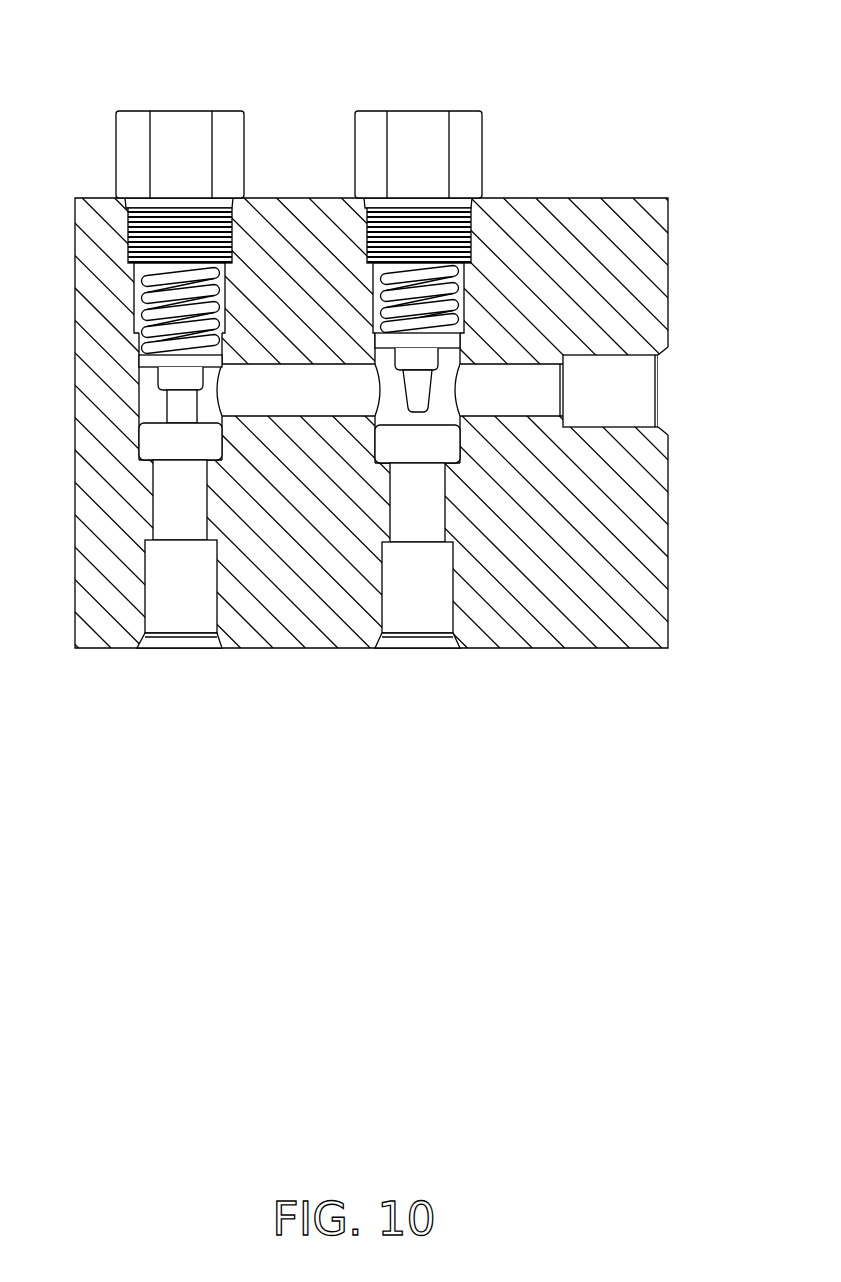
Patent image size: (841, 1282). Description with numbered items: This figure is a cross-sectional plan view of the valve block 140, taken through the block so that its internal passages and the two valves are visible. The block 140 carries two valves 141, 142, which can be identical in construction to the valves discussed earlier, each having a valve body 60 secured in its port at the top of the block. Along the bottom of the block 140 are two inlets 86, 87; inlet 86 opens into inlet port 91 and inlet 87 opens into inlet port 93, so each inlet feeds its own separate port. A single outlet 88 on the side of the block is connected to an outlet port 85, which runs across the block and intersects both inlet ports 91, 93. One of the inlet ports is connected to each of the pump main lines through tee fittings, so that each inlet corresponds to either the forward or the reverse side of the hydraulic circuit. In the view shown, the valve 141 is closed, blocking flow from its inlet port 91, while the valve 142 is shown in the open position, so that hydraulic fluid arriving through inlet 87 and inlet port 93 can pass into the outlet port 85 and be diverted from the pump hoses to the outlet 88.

The block 140 is at (585, 128).
The valve 141 is at (135, 92).
The valve 142 is at (373, 92).
The valve body 60 is at (200, 168).
The outlet port 85 is at (487, 403).
The outlet 88 is at (670, 390).
The inlet port 91 is at (161, 514).
The inlet port 93 is at (399, 515).
The inlet 86 is at (178, 648).
The inlet 87 is at (415, 648).